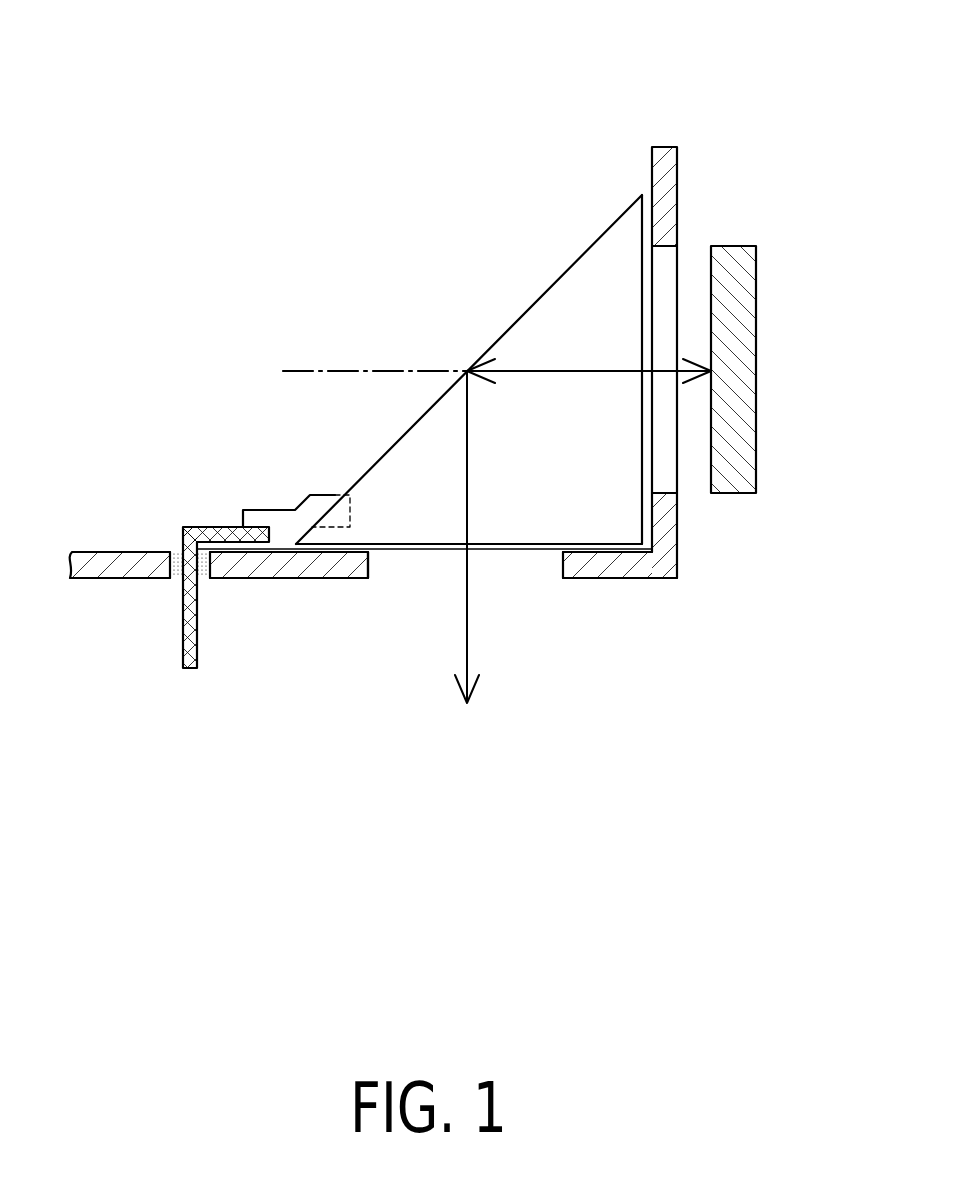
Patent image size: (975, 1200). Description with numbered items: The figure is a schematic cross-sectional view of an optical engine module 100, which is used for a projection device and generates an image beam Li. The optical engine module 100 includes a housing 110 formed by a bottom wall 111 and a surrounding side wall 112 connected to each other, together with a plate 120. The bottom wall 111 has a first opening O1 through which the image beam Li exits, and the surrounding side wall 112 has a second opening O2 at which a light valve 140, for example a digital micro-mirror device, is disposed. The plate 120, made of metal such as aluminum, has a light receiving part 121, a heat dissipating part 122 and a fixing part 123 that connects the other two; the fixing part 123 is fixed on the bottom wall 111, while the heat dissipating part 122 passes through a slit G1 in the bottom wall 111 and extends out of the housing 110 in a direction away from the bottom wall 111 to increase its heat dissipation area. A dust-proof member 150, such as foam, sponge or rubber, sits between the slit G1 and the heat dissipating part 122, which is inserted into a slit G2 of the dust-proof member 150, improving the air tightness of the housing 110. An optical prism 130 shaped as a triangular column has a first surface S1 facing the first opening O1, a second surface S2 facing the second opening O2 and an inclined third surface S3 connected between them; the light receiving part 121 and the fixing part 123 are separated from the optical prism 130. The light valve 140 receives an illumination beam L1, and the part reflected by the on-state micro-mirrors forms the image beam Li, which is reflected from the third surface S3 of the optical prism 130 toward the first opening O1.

The optical engine module 100 is at (176, 51).
The housing 110 is at (454, 350).
The bottom wall 111 is at (103, 560).
The surrounding side wall 112 is at (668, 187).
The plate 120 is at (411, 655).
The light receiving part 121 is at (307, 510).
The heat dissipating part 122 is at (197, 645).
The fixing part 123 is at (247, 540).
The optical prism 130 is at (469, 384).
The light valve 140 is at (740, 373).
The dust-proof member 150 is at (170, 564).
The slit G1 is at (177, 578).
The slit G2 is at (200, 578).
The first opening O1 is at (403, 578).
The second opening O2 is at (682, 489).
The first surface S1 is at (588, 558).
The second surface S2 is at (631, 256).
The third surface S3 is at (408, 412).
The illumination beam L1 is at (302, 370).
The image beam Li is at (468, 615).